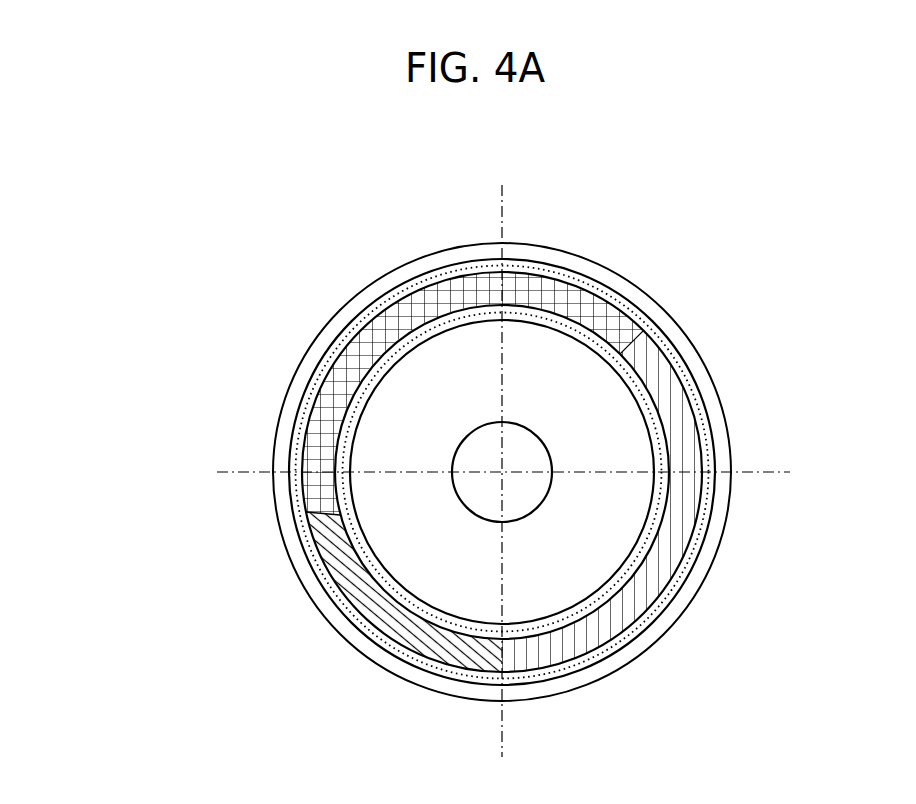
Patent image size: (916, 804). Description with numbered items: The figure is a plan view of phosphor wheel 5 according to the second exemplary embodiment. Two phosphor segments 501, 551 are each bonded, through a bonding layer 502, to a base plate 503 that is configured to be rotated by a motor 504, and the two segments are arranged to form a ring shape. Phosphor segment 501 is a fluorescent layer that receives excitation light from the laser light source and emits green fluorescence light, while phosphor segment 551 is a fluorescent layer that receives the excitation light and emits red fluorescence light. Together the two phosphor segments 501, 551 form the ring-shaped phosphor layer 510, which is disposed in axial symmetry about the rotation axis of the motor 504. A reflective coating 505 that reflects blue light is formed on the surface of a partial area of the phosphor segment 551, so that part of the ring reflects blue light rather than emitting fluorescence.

The phosphor wheel 5 is at (540, 226).
The phosphor segment 501 is at (372, 335).
The bonding layer 502 is at (318, 382).
The base plate 503 is at (562, 562).
The motor 504 is at (487, 497).
The reflective coating 505 is at (378, 606).
The phosphor layer 510 is at (500, 472).
The phosphor segment 551 is at (643, 352).